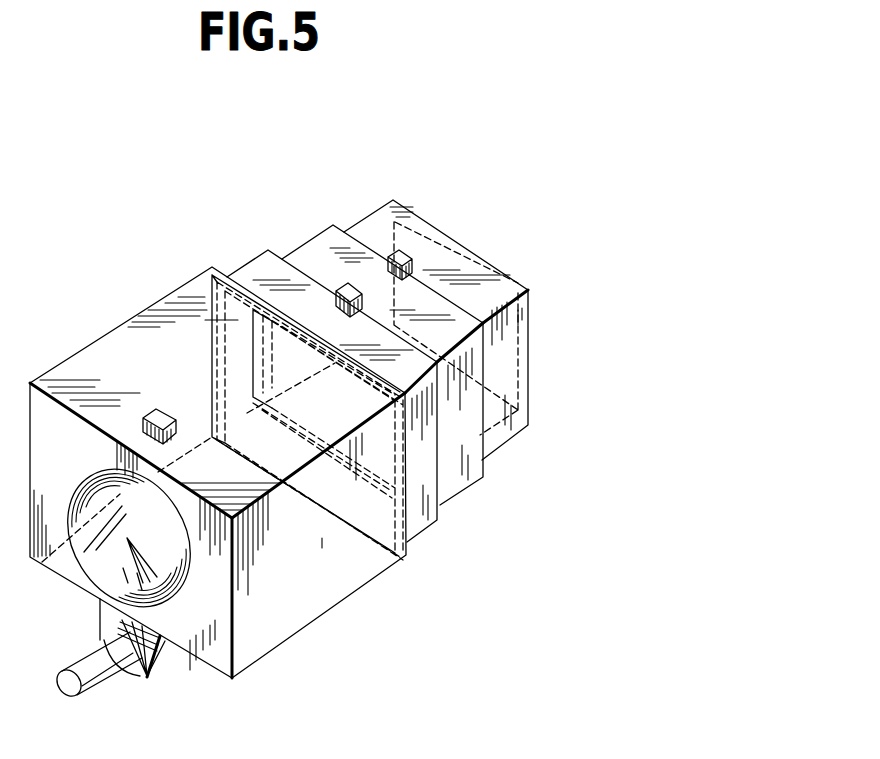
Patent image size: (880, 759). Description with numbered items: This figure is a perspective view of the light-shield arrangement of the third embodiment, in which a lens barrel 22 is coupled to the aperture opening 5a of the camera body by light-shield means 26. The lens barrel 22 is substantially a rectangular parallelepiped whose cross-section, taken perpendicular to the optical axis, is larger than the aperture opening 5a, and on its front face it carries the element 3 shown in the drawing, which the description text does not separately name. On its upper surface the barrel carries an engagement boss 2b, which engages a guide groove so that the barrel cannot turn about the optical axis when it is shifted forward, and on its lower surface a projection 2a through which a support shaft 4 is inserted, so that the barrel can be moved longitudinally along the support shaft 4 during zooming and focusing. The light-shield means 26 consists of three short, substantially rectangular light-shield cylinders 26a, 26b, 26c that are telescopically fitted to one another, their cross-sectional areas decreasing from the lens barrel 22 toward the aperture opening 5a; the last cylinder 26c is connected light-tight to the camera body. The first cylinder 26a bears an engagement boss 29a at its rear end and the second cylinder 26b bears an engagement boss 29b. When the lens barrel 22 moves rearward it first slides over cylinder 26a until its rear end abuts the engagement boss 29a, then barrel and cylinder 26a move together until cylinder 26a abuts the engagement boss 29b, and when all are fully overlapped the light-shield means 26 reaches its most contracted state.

The lens barrel 22 is at (347, 565).
The lens 3 is at (97, 557).
The projection 2a is at (143, 668).
The support shaft 4 is at (95, 670).
The engagement boss 2b is at (160, 407).
The light-shield means 26 is at (320, 162).
The light-shield cylinder 26a is at (257, 270).
The light-shield cylinder 26b is at (322, 243).
The light-shield cylinder 26c is at (370, 227).
The engagement boss 29a is at (338, 289).
The engagement boss 29b is at (398, 253).
The aperture opening 5a is at (522, 360).